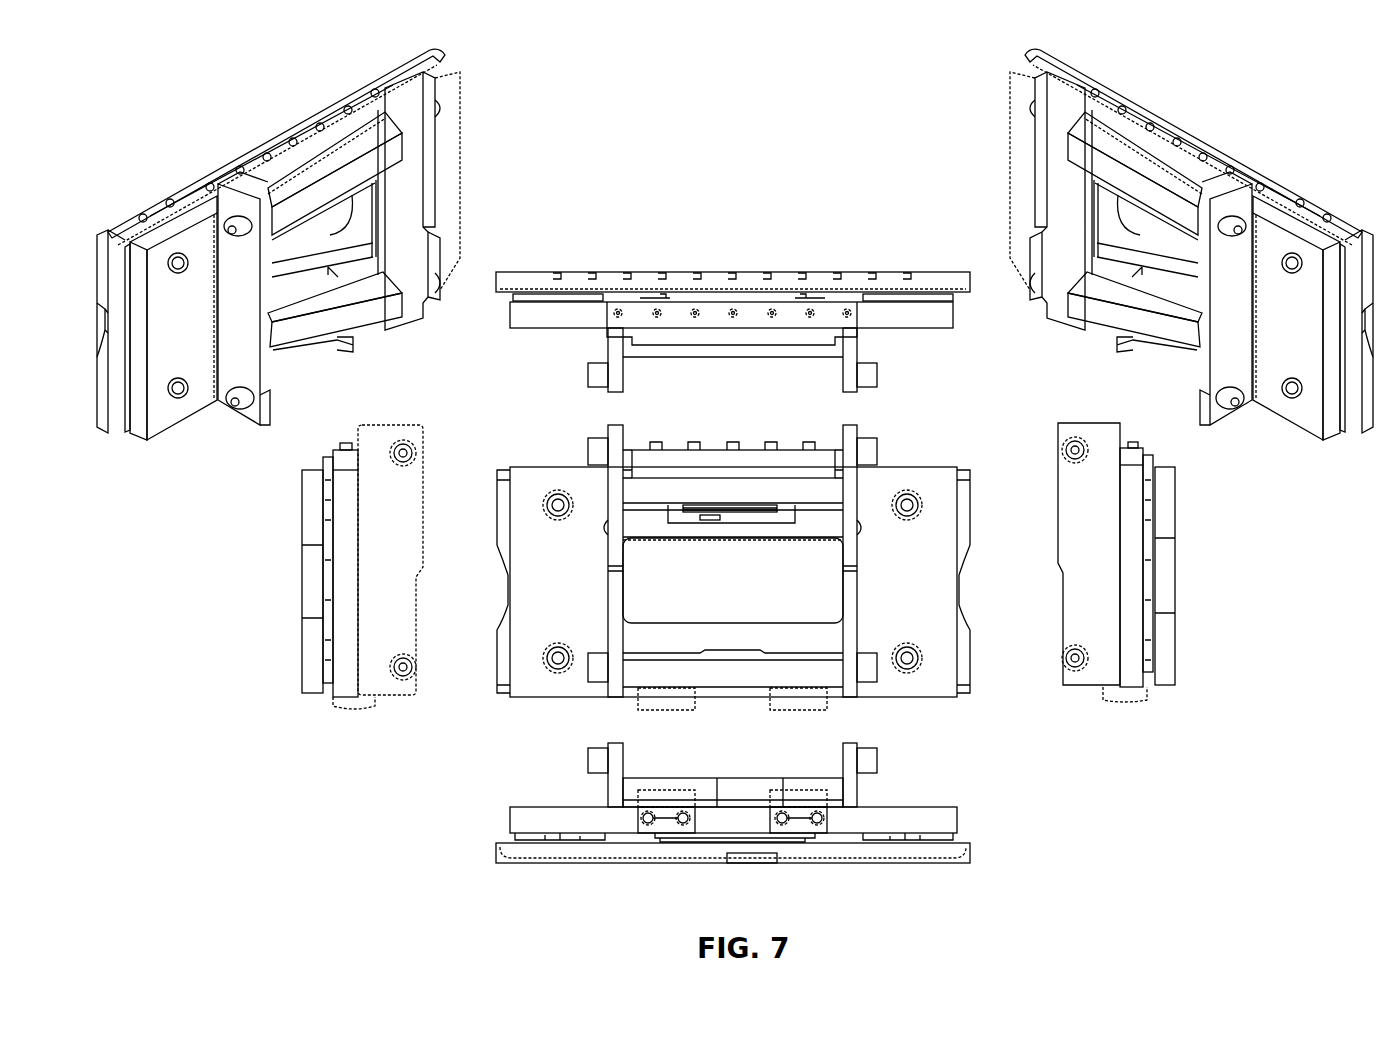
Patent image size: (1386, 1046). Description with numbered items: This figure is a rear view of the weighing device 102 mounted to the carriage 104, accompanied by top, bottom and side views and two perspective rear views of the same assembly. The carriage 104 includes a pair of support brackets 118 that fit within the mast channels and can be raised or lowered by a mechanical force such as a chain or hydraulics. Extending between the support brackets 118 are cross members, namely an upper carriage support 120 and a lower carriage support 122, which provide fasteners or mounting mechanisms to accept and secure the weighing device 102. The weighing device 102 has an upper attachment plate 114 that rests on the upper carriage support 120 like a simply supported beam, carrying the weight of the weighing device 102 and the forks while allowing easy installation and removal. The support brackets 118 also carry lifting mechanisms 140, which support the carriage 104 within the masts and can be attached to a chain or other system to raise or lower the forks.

The weighing device 102 is at (625, 240).
The carriage 104 is at (775, 385).
The upper attachment plate 114 is at (680, 340).
The support brackets 118 is at (608, 356).
The upper carriage support 120 is at (743, 355).
The lower carriage support 122 is at (765, 778).
The lifting mechanisms 140 is at (877, 387).